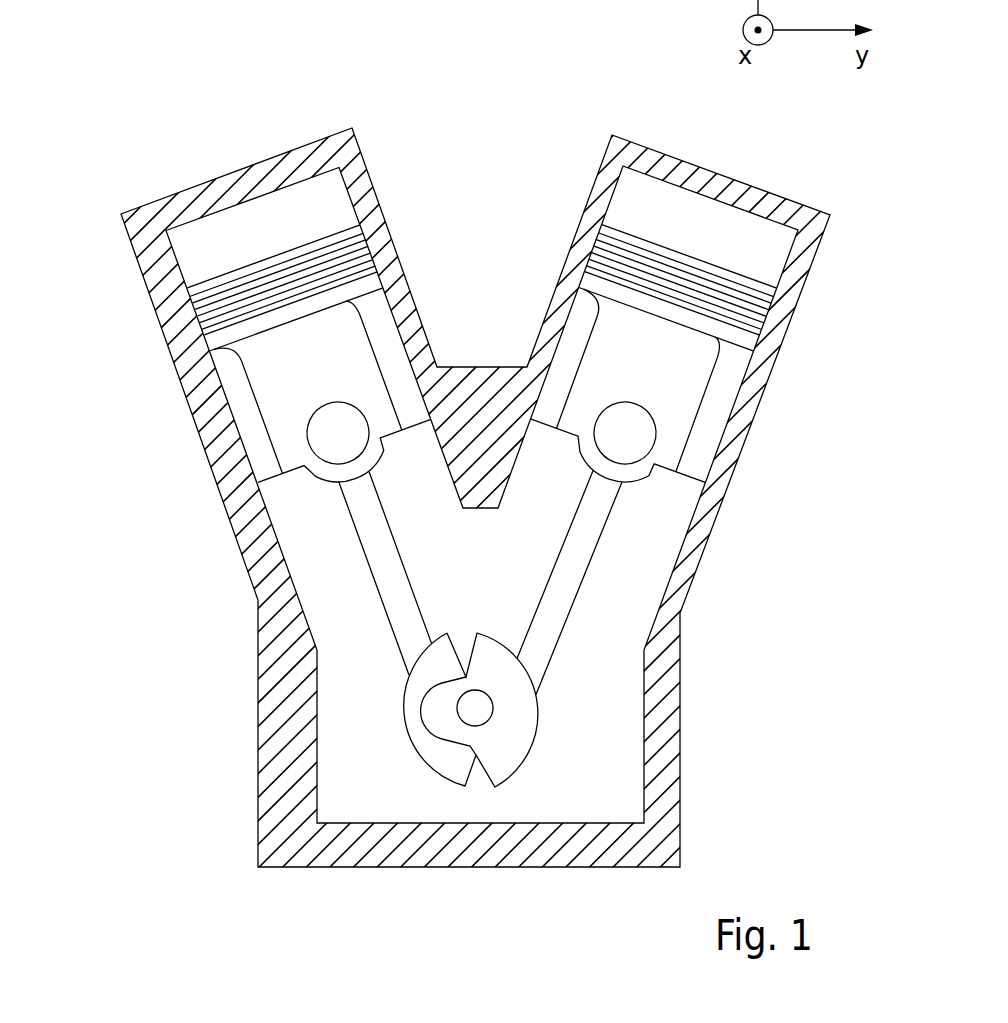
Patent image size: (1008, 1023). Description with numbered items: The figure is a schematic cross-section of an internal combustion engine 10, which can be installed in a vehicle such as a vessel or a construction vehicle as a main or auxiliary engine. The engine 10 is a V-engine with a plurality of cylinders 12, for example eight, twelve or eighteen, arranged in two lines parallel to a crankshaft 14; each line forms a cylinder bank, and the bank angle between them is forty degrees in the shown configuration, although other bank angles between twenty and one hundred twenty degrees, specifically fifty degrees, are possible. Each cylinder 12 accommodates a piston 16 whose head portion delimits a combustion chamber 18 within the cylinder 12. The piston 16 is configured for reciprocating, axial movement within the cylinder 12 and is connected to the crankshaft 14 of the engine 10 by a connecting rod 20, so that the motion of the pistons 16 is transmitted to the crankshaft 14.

The internal combustion engine 10 is at (117, 110).
The cylinder 12 is at (356, 196).
The crankshaft 14 is at (480, 708).
The piston 16 is at (277, 377).
The combustion chamber 18 is at (257, 224).
The connecting rod 20 is at (366, 550).